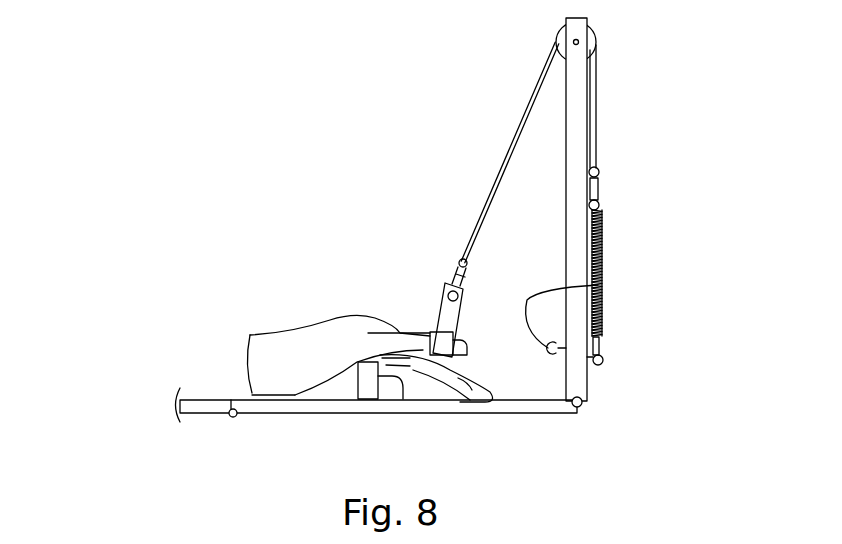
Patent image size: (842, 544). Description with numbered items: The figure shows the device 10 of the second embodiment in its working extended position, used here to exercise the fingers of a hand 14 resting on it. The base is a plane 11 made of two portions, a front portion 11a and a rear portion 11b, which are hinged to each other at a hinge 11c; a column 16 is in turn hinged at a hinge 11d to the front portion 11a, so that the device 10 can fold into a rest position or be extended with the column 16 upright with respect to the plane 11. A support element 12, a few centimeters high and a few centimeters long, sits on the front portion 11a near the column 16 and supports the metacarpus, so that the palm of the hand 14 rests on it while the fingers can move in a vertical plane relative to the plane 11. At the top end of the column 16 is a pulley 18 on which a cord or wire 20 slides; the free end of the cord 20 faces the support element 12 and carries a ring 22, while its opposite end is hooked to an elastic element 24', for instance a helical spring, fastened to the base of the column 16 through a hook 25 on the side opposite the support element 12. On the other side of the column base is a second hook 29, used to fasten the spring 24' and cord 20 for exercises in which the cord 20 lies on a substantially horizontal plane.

The device 10 is at (320, 200).
The plane 11 is at (392, 417).
The front portion 11a is at (453, 414).
The portion 11b is at (208, 403).
The hinge 11c is at (233, 415).
The hinge 11d is at (582, 404).
The support element 12 is at (362, 372).
The hand and forearm 14 is at (272, 322).
The column 16 is at (577, 100).
The pulley 18 is at (595, 34).
The cord or wire 20 is at (530, 96).
The ring 22 is at (438, 305).
The elastic element 24' is at (659, 251).
The hook 25 is at (603, 360).
The second hook 29 is at (598, 286).